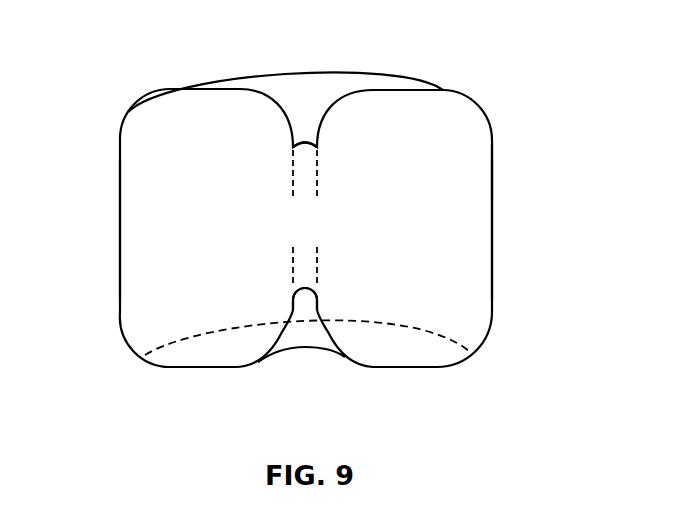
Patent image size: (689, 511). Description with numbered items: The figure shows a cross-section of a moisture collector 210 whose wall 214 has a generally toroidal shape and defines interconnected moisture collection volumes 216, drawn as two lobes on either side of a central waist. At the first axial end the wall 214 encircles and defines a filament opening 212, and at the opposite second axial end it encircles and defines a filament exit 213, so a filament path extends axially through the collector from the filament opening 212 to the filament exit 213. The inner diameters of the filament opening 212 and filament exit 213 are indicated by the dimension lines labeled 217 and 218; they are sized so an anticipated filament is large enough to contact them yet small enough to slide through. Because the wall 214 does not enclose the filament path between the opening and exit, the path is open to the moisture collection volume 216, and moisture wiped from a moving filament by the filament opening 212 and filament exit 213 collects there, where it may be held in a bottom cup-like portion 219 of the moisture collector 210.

The moisture collector 210 is at (133, 60).
The filament opening 212 is at (305, 316).
The filament exit 213 is at (302, 126).
The wall 214 is at (492, 172).
The moisture collection volume 216 is at (156, 235).
The bottom slot width 217 is at (270, 282).
The top slot width 218 is at (324, 161).
The bottom cup-like portion 219 is at (397, 356).